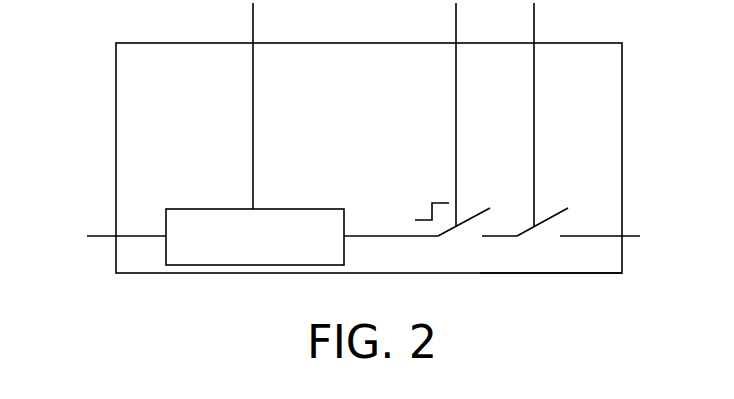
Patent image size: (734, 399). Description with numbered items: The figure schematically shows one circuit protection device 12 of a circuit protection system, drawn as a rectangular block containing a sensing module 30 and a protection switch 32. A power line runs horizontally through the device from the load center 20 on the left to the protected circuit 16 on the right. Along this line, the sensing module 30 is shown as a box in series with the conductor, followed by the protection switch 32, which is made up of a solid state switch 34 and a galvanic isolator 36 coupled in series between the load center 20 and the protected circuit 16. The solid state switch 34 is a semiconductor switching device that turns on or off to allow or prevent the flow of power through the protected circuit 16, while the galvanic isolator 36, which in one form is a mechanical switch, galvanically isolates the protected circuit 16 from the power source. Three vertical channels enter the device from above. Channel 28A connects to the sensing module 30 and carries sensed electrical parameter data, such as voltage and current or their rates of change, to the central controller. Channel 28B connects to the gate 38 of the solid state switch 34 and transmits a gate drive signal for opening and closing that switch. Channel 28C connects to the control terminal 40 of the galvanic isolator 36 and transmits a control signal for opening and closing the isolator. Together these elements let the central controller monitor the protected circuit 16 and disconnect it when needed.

The circuit protection device 12 is at (622, 66).
The protected circuit 16 is at (636, 238).
The load center 20 is at (96, 238).
The channel 28A is at (253, 14).
The channel 28B is at (456, 14).
The channel 28C is at (534, 14).
The sensing module 30 is at (186, 208).
The protection switch 32 is at (535, 294).
The solid state switch 34 is at (470, 220).
The galvanic isolator 36 is at (549, 220).
The gate 38 is at (418, 195).
The control terminal 40 is at (514, 204).